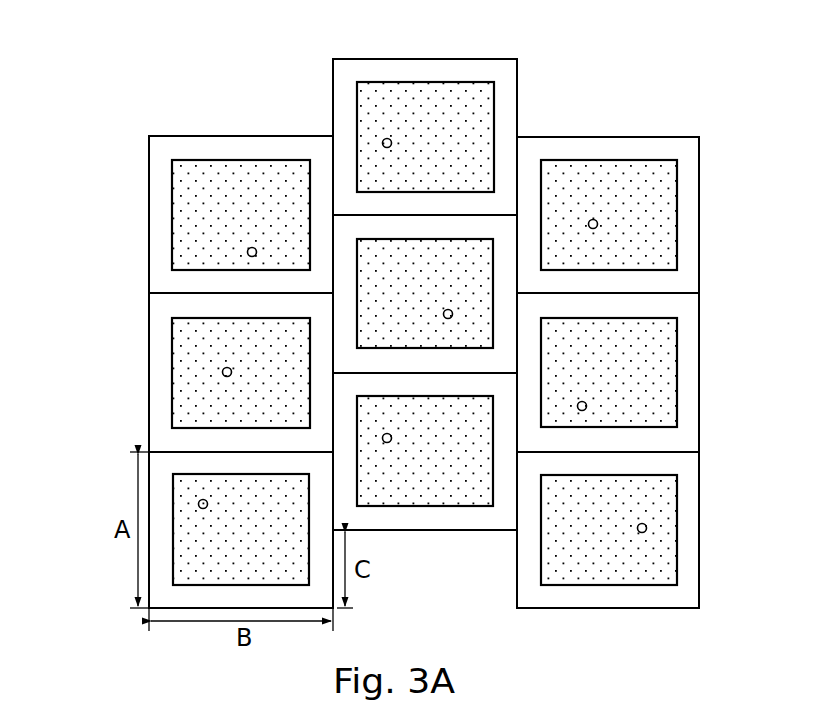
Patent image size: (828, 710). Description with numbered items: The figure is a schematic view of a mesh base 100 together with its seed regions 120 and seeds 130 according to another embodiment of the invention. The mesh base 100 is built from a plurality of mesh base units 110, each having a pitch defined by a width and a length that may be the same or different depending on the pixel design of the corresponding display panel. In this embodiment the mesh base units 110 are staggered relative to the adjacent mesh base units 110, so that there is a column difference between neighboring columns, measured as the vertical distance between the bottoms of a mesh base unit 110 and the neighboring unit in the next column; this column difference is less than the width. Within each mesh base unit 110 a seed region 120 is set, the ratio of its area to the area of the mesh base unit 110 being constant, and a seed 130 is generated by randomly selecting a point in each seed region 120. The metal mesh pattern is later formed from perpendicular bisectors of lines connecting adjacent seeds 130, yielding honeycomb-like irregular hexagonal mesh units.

The mesh base 100 is at (99, 123).
The mesh base unit 110 is at (148, 194).
The seed region 120 is at (173, 232).
The seed 130 is at (247, 252).